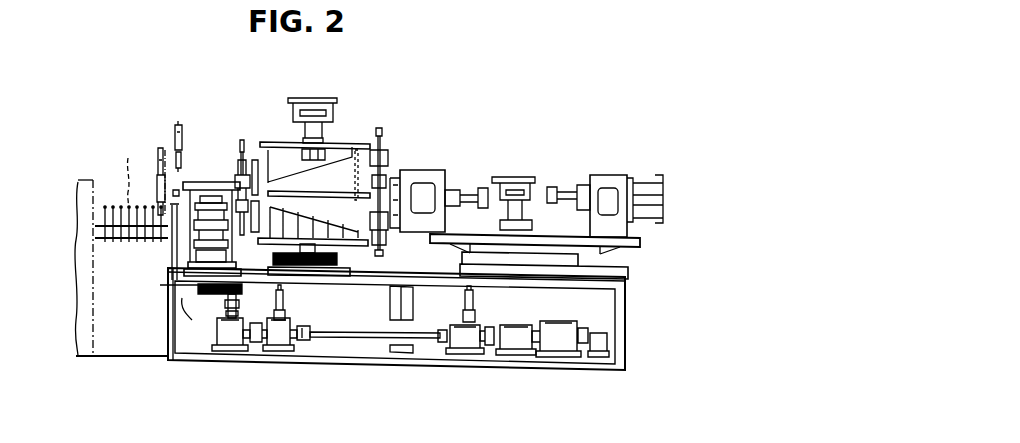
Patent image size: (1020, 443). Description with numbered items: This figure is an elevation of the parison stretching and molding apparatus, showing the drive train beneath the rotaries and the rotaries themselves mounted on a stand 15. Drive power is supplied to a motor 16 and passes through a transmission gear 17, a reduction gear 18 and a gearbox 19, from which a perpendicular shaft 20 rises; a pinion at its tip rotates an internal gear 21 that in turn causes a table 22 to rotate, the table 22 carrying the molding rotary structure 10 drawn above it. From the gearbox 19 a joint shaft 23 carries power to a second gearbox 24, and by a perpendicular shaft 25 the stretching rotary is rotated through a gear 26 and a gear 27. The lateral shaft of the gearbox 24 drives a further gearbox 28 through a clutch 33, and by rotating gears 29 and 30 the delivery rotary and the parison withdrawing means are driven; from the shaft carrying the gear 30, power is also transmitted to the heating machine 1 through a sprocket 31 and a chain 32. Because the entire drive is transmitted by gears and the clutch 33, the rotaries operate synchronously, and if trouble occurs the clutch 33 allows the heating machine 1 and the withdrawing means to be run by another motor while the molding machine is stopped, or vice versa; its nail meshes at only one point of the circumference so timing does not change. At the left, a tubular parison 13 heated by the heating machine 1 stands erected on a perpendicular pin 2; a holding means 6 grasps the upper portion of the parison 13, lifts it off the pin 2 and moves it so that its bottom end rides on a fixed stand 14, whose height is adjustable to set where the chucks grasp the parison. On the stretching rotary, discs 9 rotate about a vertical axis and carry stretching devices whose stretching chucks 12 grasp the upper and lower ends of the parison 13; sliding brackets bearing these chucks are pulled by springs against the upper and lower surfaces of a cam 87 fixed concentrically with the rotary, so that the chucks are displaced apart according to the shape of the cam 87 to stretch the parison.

The heating machine 1 is at (94, 157).
The perpendicular pin 2 is at (117, 150).
The holding means 6 is at (173, 138).
The disc 9 is at (351, 141).
The headstock 10 is at (427, 169).
The stretching chuck 12 is at (233, 168).
The tubular parison 13 is at (157, 200).
The fixed stand 14 is at (171, 249).
The stand 15 is at (623, 285).
The motor 16 is at (608, 340).
The transmission gear 17 is at (563, 353).
The reduction gear 18 is at (521, 351).
The gearbox 19 is at (462, 351).
The perpendicular shaft 20 is at (473, 299).
The internal gear 21 is at (575, 263).
The table 22 is at (643, 240).
The joint shaft 23 is at (356, 340).
The gearbox 24 is at (285, 348).
The perpendicular shaft 25 is at (284, 302).
The gear 26 is at (304, 324).
The gear 27 is at (338, 265).
The gearbox 28 is at (235, 348).
The gear 29 is at (257, 315).
The gear 30 is at (204, 296).
The sprocket 31 is at (180, 302).
The chain 32 is at (170, 287).
The clutch 33 is at (258, 345).
The cam 87 is at (298, 178).